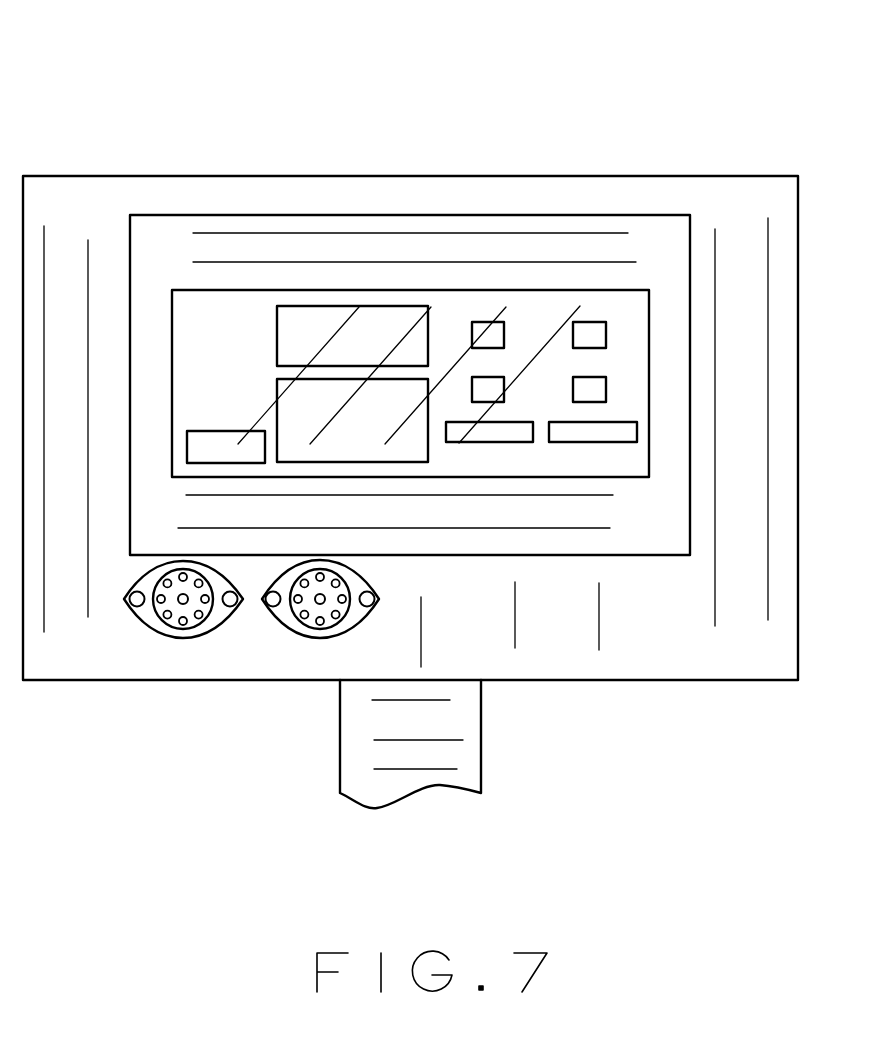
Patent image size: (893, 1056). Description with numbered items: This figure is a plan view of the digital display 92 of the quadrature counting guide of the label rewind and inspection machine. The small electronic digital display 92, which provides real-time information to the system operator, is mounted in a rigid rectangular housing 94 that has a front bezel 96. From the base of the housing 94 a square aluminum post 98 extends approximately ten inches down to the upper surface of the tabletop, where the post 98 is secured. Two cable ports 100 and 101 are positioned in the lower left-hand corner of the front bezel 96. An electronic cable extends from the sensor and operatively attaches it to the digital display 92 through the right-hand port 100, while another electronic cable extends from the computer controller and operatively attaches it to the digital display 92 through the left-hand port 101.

The digital display 92 is at (349, 332).
The housing 94 is at (463, 132).
The front bezel 96 is at (743, 218).
The post 98 is at (448, 728).
The cable port 100 is at (208, 632).
The cable port 101 is at (322, 635).